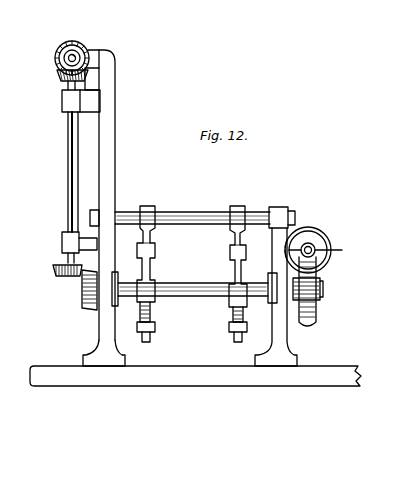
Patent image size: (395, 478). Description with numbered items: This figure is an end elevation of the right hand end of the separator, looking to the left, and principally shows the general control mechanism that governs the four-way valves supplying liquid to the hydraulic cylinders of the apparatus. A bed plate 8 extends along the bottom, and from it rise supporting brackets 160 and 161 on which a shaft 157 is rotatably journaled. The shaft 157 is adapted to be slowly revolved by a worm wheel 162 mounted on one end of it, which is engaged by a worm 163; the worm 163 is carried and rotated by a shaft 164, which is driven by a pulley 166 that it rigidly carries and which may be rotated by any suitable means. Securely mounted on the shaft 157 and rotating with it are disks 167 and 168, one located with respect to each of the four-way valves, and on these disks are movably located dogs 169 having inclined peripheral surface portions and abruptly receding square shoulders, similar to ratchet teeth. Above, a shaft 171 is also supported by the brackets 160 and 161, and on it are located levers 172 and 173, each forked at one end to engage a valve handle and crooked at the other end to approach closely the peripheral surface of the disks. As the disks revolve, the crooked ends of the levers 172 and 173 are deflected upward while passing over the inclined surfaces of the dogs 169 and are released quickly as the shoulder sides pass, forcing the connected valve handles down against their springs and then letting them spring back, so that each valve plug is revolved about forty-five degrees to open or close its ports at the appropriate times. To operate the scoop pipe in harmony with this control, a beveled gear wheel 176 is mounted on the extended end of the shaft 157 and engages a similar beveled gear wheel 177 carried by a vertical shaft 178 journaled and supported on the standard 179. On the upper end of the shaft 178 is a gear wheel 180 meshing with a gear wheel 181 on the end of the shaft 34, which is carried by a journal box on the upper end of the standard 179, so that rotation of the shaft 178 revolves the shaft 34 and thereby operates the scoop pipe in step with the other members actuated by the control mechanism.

The bed plate 8 is at (218, 377).
The shaft 34 is at (57, 67).
The shaft 157 is at (205, 272).
The supporting bracket 160 is at (100, 333).
The supporting bracket 161 is at (283, 340).
The worm wheel 162 is at (314, 313).
The worm 163 is at (312, 245).
The shaft 164 is at (328, 253).
The pulley 166 is at (302, 228).
The disk 167 is at (151, 313).
The disk 168 is at (233, 314).
The dog 169 is at (228, 340).
The shaft 171 is at (197, 214).
The lever 172 is at (148, 212).
The lever 173 is at (243, 208).
The beveled gear wheel 176 is at (82, 298).
The beveled gear wheel 177 is at (53, 272).
The shaft 178 is at (68, 192).
The standard 179 is at (107, 155).
The gear wheel 180 is at (62, 85).
The gear wheel 181 is at (78, 33).